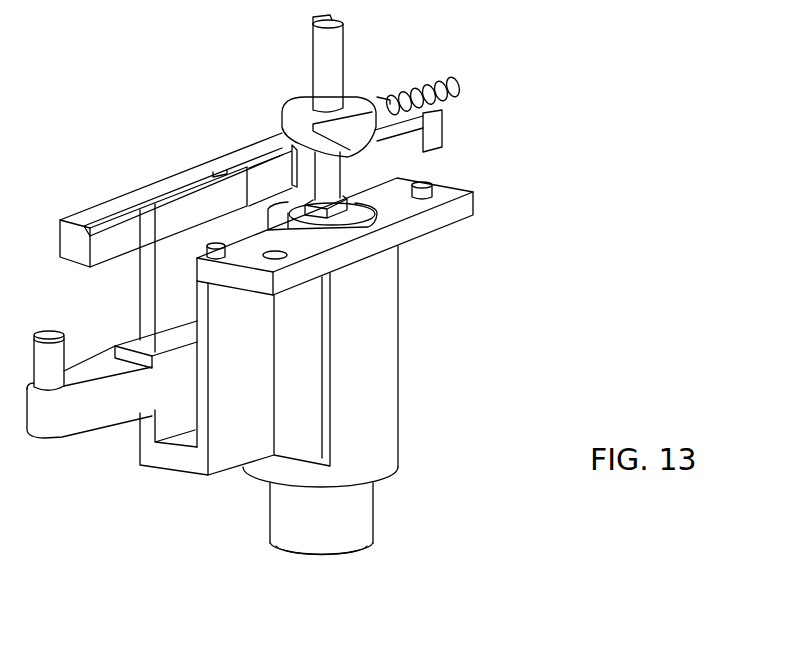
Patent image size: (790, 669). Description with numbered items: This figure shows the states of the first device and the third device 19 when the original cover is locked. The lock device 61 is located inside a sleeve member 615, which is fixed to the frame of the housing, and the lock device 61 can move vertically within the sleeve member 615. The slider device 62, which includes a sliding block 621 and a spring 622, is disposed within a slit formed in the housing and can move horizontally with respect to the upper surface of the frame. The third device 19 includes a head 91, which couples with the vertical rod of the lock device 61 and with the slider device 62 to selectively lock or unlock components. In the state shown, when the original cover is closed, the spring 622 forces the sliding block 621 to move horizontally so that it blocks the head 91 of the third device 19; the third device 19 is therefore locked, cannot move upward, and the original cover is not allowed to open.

The third device 19 is at (346, 67).
The lock device 61 is at (118, 437).
The slider device 62 is at (251, 182).
The sliding block 621 is at (172, 180).
The spring 622 is at (433, 87).
The head 91 is at (342, 207).
The sleeve member 615 is at (369, 430).